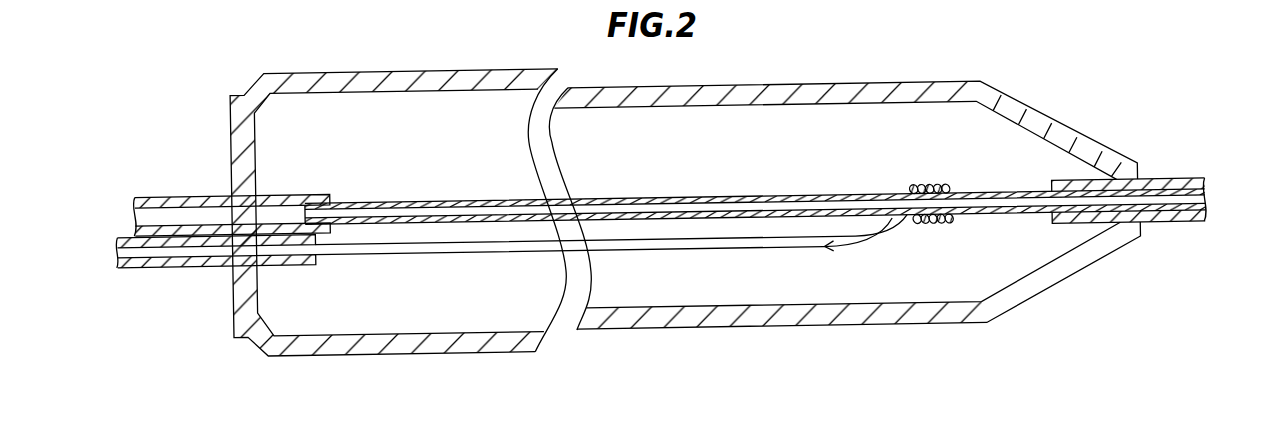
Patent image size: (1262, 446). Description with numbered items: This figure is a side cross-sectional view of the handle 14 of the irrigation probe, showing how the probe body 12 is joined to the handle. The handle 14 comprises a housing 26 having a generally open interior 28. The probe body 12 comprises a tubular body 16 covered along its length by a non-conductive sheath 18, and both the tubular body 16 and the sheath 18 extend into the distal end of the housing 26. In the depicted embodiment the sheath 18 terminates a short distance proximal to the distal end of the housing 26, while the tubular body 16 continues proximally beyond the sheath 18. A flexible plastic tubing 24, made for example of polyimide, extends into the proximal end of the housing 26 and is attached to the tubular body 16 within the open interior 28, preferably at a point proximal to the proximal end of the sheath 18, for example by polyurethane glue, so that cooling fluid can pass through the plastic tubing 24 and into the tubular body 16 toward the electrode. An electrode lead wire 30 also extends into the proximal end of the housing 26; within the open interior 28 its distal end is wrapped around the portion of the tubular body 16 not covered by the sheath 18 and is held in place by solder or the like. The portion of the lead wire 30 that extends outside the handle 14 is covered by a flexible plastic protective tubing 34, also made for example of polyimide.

The probe body 12 is at (1183, 170).
The handle 14 is at (973, 68).
The tubular body 16 is at (1018, 214).
The sheath 18 is at (1167, 182).
The flexible plastic tubing 24 is at (175, 203).
The housing 26 is at (702, 320).
The open interior 28 is at (858, 290).
The electrode lead wire 30 is at (432, 250).
The flexible plastic protective tubing 34 is at (207, 267).